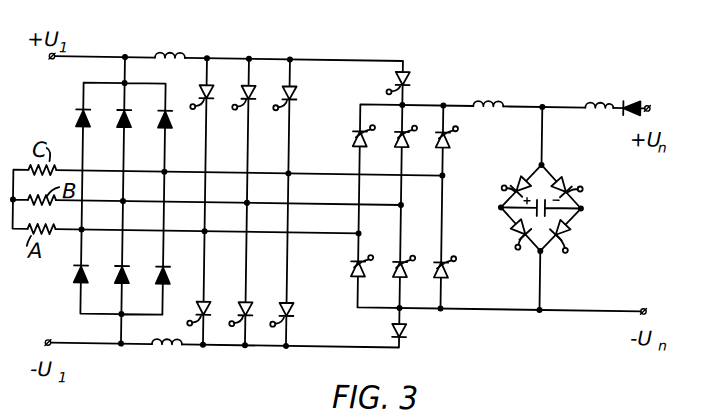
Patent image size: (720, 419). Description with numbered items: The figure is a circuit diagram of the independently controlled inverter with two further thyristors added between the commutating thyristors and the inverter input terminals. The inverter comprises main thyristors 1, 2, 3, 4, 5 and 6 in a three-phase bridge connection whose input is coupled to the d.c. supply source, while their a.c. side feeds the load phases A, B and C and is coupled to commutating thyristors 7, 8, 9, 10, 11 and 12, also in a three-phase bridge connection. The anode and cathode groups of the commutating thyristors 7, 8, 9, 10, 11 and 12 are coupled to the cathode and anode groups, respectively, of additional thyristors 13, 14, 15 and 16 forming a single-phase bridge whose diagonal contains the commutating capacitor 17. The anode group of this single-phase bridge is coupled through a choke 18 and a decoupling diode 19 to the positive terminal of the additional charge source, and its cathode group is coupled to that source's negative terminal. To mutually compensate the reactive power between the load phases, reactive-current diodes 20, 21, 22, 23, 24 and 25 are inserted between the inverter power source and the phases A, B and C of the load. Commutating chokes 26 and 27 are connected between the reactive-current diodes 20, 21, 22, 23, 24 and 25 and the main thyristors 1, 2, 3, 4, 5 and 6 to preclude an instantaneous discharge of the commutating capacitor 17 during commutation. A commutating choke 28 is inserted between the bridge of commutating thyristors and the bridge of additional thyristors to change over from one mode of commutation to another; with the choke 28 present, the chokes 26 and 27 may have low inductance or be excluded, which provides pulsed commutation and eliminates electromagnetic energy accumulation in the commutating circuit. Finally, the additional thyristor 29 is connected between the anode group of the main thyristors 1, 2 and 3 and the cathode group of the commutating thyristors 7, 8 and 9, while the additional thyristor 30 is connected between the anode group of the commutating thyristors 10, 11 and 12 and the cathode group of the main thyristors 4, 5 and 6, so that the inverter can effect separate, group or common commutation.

The main thyristor 1 is at (200, 94).
The main thyristor 2 is at (242, 94).
The main thyristor 3 is at (284, 94).
The main thyristor 4 is at (195, 310).
The main thyristor 5 is at (238, 309).
The main thyristor 6 is at (280, 309).
The commutating thyristor 7 is at (354, 139).
The commutating thyristor 8 is at (396, 141).
The commutating thyristor 9 is at (438, 145).
The commutating thyristor 10 is at (353, 272).
The commutating thyristor 11 is at (395, 272).
The commutating thyristor 12 is at (435, 273).
The additional thyristor 13 is at (516, 174).
The additional thyristor 14 is at (562, 174).
The additional thyristor 15 is at (512, 230).
The additional thyristor 16 is at (570, 227).
The commutating capacitor 17 is at (526, 209).
The choke 18 is at (610, 96).
The decoupling diode 19 is at (644, 86).
The reactive-current diode 20 is at (76, 119).
The reactive-current diode 21 is at (120, 122).
The reactive-current diode 22 is at (159, 122).
The reactive-current diode 23 is at (75, 283).
The reactive-current diode 24 is at (116, 283).
The reactive-current diode 25 is at (159, 285).
The commutating choke 26 is at (186, 54).
The commutating choke 27 is at (167, 352).
The commutating choke 28 is at (475, 101).
The additional thyristor 29 is at (406, 73).
The additional thyristor 30 is at (406, 326).